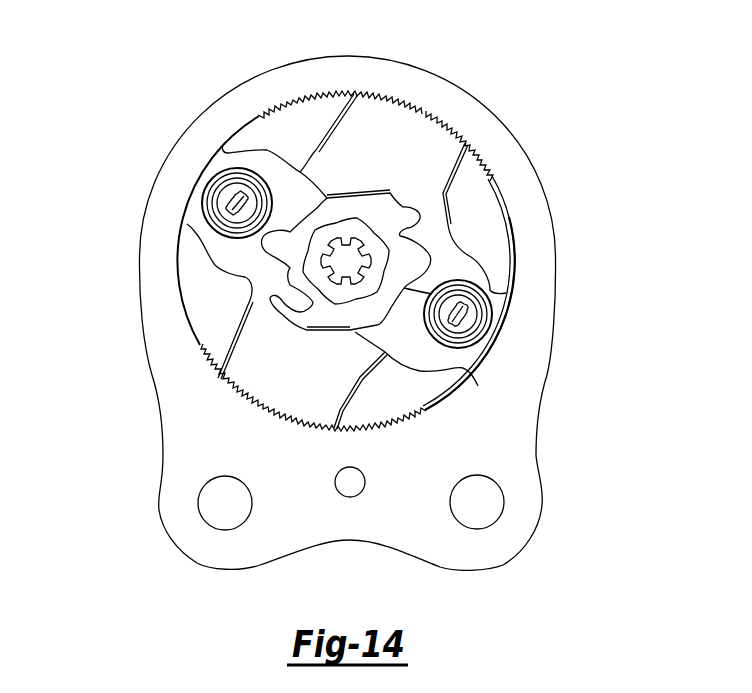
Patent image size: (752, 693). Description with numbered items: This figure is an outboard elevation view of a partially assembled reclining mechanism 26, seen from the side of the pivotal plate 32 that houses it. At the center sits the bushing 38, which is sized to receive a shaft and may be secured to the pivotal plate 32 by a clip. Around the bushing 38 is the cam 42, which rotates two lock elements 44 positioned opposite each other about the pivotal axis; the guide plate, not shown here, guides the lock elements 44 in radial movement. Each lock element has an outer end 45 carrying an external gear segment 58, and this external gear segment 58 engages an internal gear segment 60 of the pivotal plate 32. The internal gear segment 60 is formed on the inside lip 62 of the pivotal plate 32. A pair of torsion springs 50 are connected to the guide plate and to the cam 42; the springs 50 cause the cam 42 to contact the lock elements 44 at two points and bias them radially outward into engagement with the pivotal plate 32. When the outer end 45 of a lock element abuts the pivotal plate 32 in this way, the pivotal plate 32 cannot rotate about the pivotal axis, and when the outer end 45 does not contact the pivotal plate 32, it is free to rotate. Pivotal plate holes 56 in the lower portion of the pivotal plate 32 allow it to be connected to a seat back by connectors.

The reclining mechanism 26 is at (120, 111).
The pivotal plate 32 is at (150, 243).
The bushing 38 is at (375, 277).
The cam 42 is at (368, 214).
The lock elements 44 is at (398, 118).
The outer end 45 is at (278, 420).
The torsion springs 50 is at (202, 204).
The pivotal plate holes 56 is at (472, 507).
The external gear segment 58 is at (420, 110).
The internal gear segment 60 is at (480, 159).
The inside lip 62 is at (225, 150).